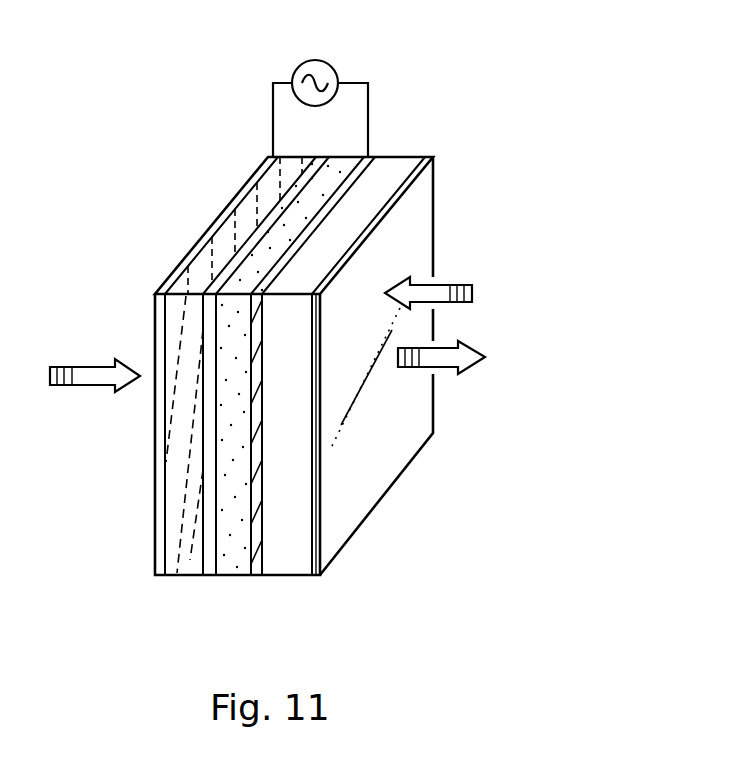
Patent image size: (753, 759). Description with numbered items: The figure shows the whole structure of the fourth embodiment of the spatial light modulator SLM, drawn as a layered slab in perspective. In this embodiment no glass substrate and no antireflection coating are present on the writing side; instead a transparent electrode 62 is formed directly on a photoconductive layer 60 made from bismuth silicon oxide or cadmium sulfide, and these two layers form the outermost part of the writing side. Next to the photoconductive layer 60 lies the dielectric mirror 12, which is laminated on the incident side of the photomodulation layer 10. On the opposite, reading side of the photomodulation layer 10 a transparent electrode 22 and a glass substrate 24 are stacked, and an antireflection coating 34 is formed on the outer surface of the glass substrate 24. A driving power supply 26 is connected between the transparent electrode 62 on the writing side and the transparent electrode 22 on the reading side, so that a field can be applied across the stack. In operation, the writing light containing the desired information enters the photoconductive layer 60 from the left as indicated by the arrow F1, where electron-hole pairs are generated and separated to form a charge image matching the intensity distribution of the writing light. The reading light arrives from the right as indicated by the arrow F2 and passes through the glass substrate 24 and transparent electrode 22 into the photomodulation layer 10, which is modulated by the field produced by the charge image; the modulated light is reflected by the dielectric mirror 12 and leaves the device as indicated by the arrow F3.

The photomodulation layer 10 is at (230, 565).
The dielectric mirror 12 is at (210, 563).
The transparent electrode 22 is at (252, 567).
The glass substrate 24 is at (293, 565).
The driving power supply 26 is at (337, 68).
The antireflection coating 34 is at (320, 507).
The photoconductive layer 60 is at (183, 567).
The transparent electrode 62 is at (159, 575).
The writing light beam F1 is at (90, 372).
The reading light F2 is at (453, 283).
The modulated reading light F3 is at (448, 360).
The spatial light modulator SLM is at (206, 200).